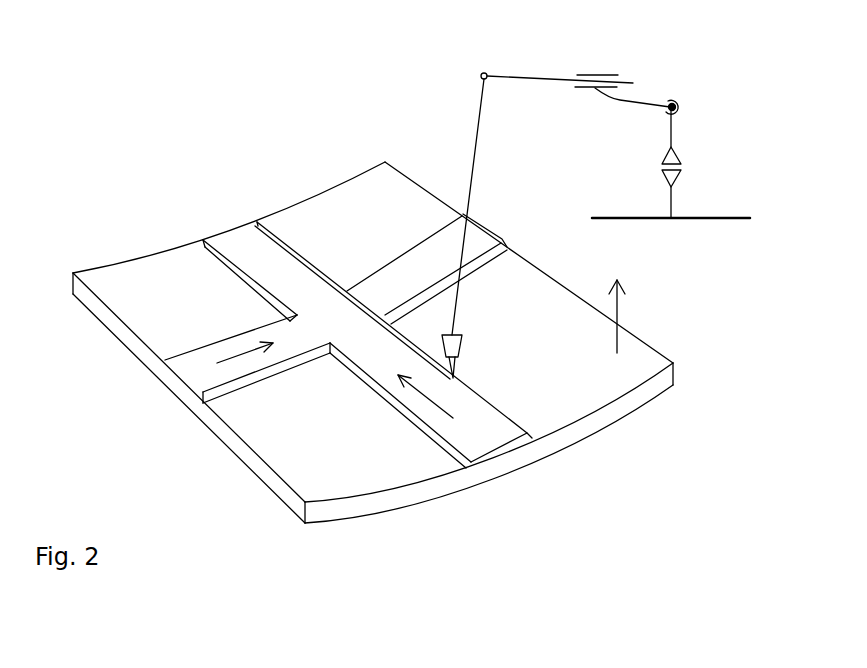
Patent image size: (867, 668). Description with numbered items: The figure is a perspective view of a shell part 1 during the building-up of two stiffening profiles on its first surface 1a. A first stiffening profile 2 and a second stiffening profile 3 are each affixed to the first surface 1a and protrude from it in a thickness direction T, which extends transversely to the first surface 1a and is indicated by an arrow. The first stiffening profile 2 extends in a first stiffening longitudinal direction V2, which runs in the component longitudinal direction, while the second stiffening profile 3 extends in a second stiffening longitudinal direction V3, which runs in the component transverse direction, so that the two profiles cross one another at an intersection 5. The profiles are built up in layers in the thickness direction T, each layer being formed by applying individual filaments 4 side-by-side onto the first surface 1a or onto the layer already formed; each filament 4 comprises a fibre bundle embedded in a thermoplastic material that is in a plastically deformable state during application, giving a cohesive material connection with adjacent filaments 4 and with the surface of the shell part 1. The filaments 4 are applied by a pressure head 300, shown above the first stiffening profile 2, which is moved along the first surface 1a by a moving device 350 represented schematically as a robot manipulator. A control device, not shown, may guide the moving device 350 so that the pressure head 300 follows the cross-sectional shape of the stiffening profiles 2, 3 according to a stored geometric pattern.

The shell part 1 is at (663, 383).
The first surface 1a is at (365, 193).
The first stiffening profile 2 is at (503, 448).
The second stiffening profile 3 is at (178, 392).
The filament 4 is at (460, 366).
The intersection 5 is at (338, 307).
The pressure head 300 is at (463, 345).
The moving device 350 is at (638, 34).
The thickness direction T is at (618, 305).
The first stiffening longitudinal direction V2 is at (414, 400).
The second stiffening longitudinal direction V3 is at (235, 354).